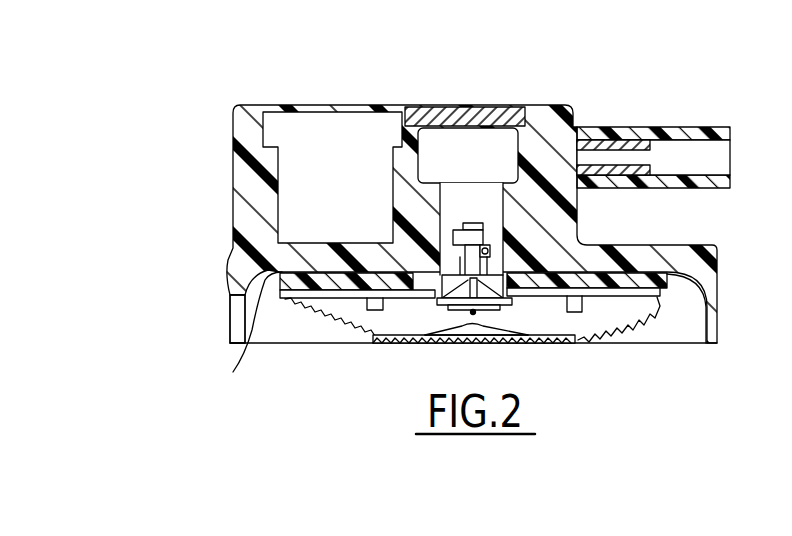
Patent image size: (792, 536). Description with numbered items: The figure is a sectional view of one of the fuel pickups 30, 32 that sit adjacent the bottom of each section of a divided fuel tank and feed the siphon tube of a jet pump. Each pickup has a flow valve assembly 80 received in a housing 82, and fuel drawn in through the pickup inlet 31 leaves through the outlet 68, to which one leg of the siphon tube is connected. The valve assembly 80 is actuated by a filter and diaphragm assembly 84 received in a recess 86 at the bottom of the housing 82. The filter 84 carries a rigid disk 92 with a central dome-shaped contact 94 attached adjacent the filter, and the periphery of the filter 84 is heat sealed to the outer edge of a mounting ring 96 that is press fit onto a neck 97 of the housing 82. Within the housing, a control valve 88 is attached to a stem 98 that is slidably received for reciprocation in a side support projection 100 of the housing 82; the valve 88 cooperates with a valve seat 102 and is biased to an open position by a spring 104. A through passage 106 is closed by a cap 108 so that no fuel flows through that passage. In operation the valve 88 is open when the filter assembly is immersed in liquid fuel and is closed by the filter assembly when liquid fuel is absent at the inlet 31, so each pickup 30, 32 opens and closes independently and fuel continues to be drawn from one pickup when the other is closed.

The fuel pickup 30 is at (425, 224).
The fuel pickup 32 is at (232, 186).
The pickup inlet 31 is at (231, 327).
The pickup outlet 68 is at (683, 126).
The flow valve assembly 80 is at (452, 253).
The housing 82 is at (232, 231).
The filter and diaphragm assembly 84 is at (621, 327).
The recess 86 is at (692, 332).
The control valve 88 is at (417, 343).
The rigid disk 92 is at (515, 340).
The dome-shaped contact 94 is at (474, 330).
The mounting ring 96 is at (236, 330).
The neck 97 is at (377, 345).
The stem 98 is at (466, 222).
The side support projection 100 is at (491, 222).
The valve seat 102 is at (505, 290).
The spring 104 is at (489, 252).
The through passage 106 is at (460, 138).
The cap 108 is at (500, 112).